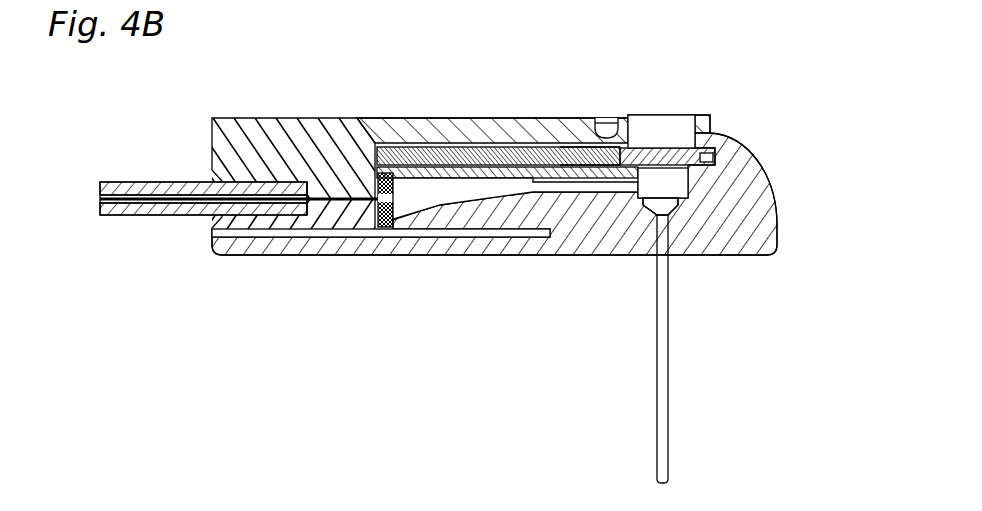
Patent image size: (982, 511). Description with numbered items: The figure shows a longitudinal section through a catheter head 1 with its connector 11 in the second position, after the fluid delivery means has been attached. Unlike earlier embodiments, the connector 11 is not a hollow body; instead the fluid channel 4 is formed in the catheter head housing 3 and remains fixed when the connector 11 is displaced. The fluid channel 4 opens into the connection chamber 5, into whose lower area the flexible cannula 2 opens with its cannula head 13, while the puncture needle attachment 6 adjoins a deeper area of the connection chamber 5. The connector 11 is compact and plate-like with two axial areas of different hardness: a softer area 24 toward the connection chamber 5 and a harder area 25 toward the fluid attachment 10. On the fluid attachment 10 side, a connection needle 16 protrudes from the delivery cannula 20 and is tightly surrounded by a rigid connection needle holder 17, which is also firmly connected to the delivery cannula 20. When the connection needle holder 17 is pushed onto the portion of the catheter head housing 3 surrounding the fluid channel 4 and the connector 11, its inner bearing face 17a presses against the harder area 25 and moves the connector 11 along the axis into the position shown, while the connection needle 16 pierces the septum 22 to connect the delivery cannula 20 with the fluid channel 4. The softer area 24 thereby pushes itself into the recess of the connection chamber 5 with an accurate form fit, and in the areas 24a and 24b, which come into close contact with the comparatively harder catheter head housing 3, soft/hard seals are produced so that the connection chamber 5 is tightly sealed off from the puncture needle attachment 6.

The catheter head 1 is at (768, 126).
The cannula 2 is at (664, 341).
The catheter head housing 3 is at (755, 222).
The fluid channel 4 is at (566, 190).
The connection chamber 5 is at (712, 163).
The puncture needle attachment 6 is at (662, 142).
The fluid attachment 10 is at (370, 209).
The connector 11 is at (592, 158).
The cannula head 13 is at (680, 210).
The connection needle 16 is at (344, 201).
The connection needle holder 17 is at (304, 142).
The inner bearing face 17a is at (368, 156).
The delivery cannula 20 is at (172, 208).
The septum 22 is at (381, 228).
The softer area 24 is at (621, 168).
The area of the softer area 24a is at (708, 155).
The area of the softer area 24b is at (612, 168).
The harder area 25 is at (462, 158).